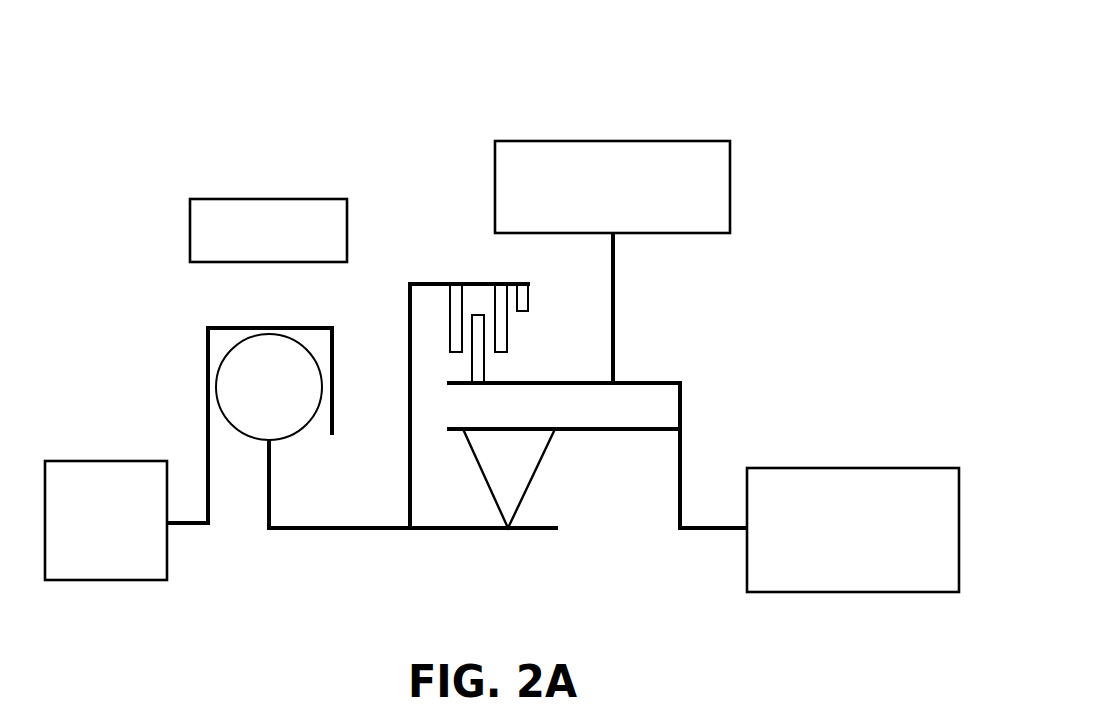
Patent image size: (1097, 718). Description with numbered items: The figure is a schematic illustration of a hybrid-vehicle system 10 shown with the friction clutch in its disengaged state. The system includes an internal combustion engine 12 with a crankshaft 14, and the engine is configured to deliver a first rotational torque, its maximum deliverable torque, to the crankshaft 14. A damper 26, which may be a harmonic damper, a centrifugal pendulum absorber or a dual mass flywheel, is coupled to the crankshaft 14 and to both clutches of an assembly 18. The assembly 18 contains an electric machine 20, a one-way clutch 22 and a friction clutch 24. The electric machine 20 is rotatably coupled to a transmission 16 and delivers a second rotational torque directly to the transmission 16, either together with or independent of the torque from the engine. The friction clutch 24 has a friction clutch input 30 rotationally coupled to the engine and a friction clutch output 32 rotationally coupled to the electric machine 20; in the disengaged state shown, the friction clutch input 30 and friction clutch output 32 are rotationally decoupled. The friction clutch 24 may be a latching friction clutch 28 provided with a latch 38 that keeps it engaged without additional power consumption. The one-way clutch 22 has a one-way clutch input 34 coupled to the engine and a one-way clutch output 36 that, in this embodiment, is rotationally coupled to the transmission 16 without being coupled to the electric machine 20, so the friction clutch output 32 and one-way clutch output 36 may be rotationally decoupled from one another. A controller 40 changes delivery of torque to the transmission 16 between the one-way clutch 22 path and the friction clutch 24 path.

The hybrid-vehicle system 10 is at (154, 88).
The internal combustion engine 12 is at (100, 485).
The crankshaft 14 is at (182, 525).
The transmission 16 is at (817, 488).
The assembly 18 is at (469, 116).
The electric machine 20 is at (647, 153).
The one-way clutch 22 is at (523, 470).
The friction clutch 24 is at (478, 325).
The damper 26 is at (230, 375).
The latching friction clutch 28 is at (478, 349).
The friction clutch input 30 is at (410, 413).
The friction clutch output 32 is at (511, 383).
The one-way clutch input 34 is at (467, 531).
The one-way clutch output 36 is at (542, 429).
The latch 38 is at (530, 297).
The controller 40 is at (207, 233).